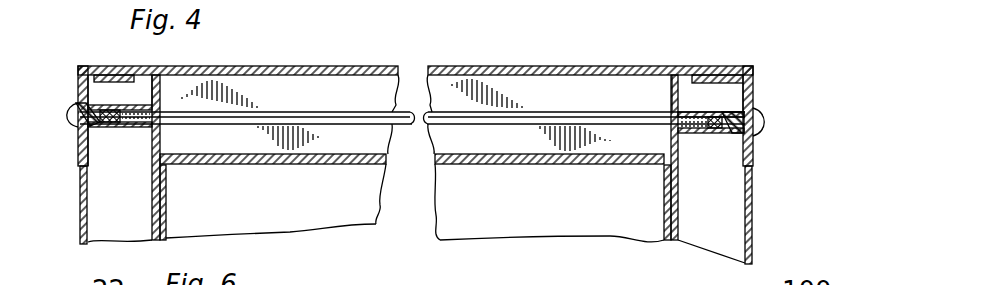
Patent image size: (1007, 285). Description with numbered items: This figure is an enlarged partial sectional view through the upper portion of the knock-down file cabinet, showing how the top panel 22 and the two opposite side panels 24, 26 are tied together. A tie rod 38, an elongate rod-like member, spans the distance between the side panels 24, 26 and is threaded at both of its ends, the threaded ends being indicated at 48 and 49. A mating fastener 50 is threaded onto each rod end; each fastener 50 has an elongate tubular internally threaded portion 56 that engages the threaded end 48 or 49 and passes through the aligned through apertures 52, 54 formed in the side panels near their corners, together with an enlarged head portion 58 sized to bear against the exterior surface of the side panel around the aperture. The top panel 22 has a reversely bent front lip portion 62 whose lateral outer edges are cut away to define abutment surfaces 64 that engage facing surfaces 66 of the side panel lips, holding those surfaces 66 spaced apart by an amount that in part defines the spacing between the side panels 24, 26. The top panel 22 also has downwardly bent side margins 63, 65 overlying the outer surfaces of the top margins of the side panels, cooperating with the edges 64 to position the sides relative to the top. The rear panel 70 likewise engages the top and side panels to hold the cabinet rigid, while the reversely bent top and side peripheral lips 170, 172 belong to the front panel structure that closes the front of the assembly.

The top panel 22 is at (546, 66).
The side panel 24 is at (74, 206).
The side panel 26 is at (762, 233).
The tie rod 38 is at (603, 114).
The threaded end 48 is at (106, 133).
The threaded end 49 is at (690, 134).
The mating fastener 50 is at (80, 150).
The through aperture 52 is at (76, 120).
The through aperture 54 is at (758, 135).
The tubular internally threaded portion 56 is at (148, 104).
The enlarged head portion 58 is at (73, 104).
The reversely bent lip portion 62 is at (318, 170).
The downwardly bent side margin 63 is at (82, 66).
The abutment surface 64 is at (170, 168).
The downwardly bent side margin 65 is at (752, 76).
The facing surface 66 is at (152, 203).
The rear panel 70 is at (575, 213).
The reversely bent top peripheral lip 170 is at (263, 170).
The reversely bent side peripheral lip 172 is at (258, 212).